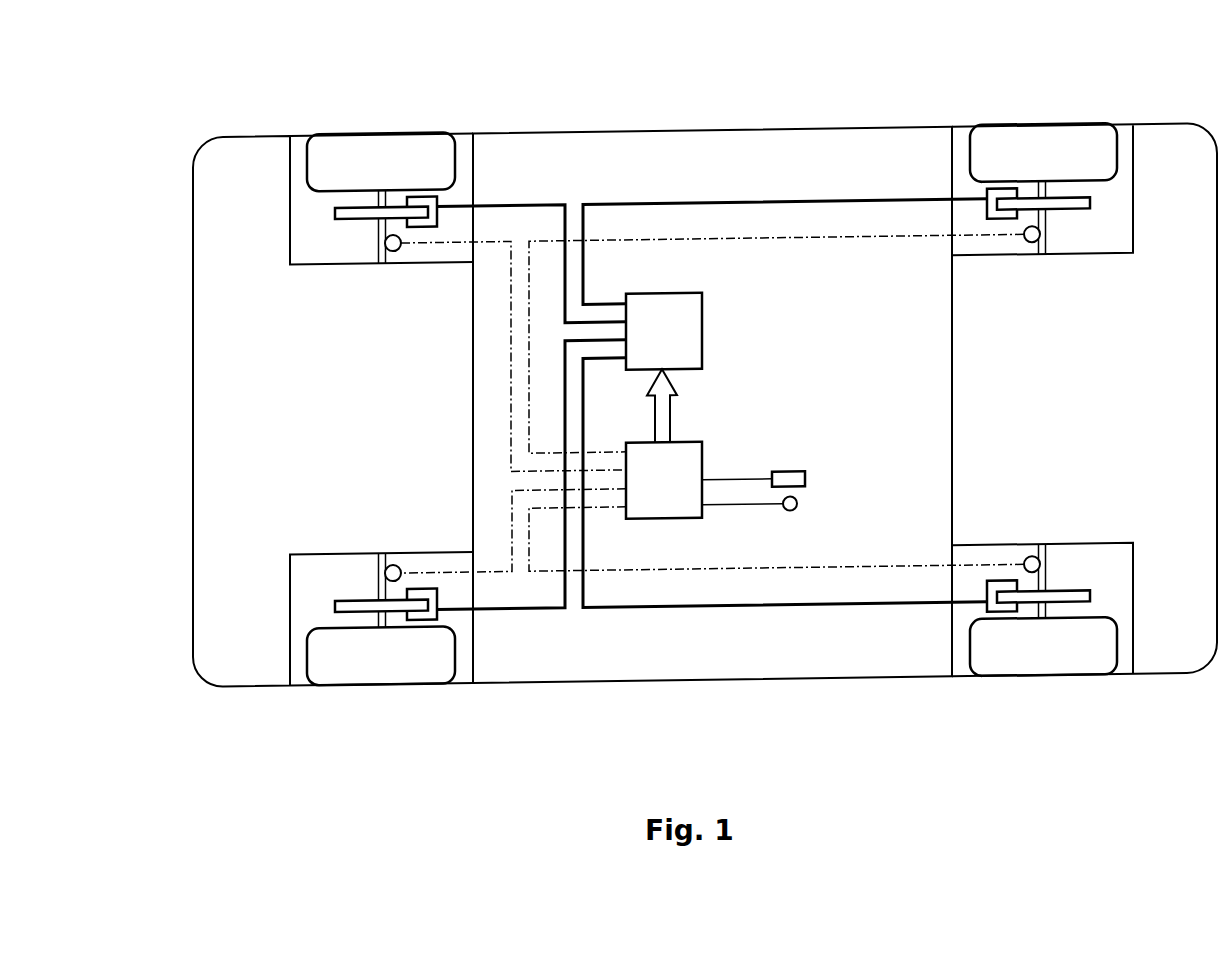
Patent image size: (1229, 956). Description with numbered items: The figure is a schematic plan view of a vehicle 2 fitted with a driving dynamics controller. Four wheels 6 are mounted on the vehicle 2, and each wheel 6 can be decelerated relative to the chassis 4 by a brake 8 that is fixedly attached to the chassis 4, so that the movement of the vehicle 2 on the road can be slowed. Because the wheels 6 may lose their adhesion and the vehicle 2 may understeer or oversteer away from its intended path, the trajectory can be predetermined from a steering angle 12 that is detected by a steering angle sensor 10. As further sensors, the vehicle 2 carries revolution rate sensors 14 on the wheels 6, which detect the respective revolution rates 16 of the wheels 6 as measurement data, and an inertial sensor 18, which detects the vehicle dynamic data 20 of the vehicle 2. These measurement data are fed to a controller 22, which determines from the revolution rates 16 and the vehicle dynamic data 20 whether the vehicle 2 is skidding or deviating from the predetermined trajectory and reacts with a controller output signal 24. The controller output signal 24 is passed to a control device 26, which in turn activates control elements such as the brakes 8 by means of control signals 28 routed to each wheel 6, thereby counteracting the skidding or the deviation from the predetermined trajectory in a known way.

The vehicle 2 is at (132, 50).
The chassis 4 is at (700, 132).
The wheel 6 is at (345, 131).
The brake 8 is at (345, 219).
The steering angle sensor 10 is at (786, 476).
The steering angle 12 is at (730, 483).
The revolution rate sensor 14 is at (395, 251).
The revolution rate 16 is at (487, 249).
The inertial sensor 18 is at (800, 511).
The vehicle dynamic data 20 is at (748, 512).
The controller 22 is at (634, 443).
The controller output signal 24 is at (670, 415).
The control device 26 is at (703, 318).
The control signal 28 is at (528, 204).